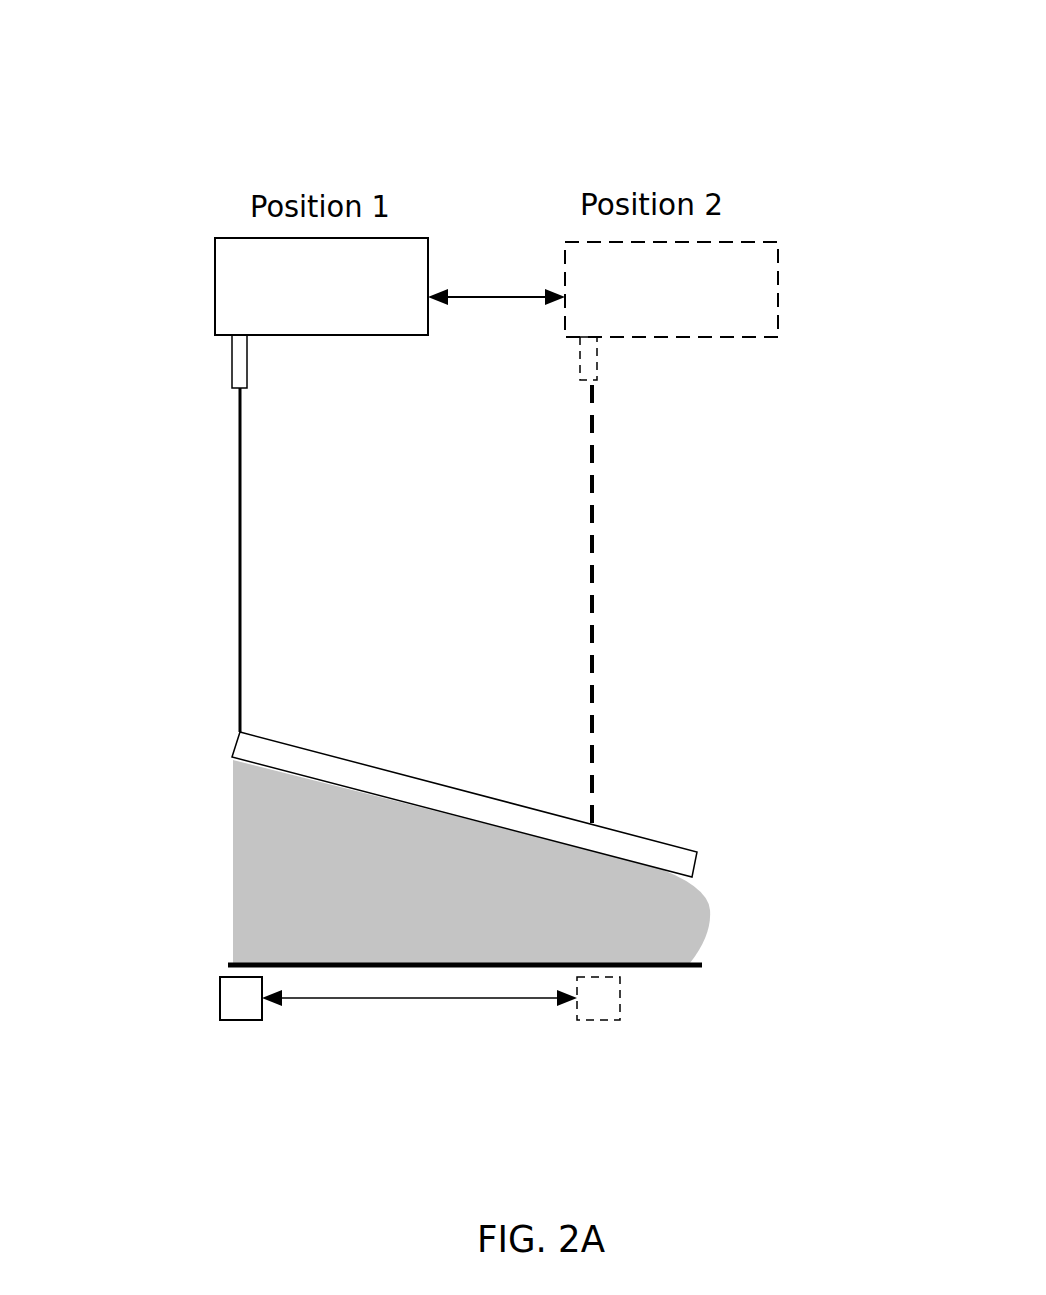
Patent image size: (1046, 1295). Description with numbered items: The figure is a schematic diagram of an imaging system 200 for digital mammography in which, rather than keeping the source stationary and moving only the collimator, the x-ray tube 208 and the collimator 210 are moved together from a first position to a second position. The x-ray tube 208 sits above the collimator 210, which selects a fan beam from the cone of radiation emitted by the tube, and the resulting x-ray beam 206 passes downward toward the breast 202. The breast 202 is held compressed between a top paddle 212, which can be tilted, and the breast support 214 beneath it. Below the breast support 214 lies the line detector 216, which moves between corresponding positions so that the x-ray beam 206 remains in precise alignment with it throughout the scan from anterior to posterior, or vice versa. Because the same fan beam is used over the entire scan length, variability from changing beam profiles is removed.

The imaging system 200 is at (517, 117).
The breast 202 is at (668, 918).
The x-ray beam 206 is at (240, 573).
The x-ray tube 208 is at (215, 295).
The collimator 210 is at (232, 365).
The top paddle 212 is at (618, 832).
The breast support 214 is at (282, 963).
The line detector 216 is at (222, 997).